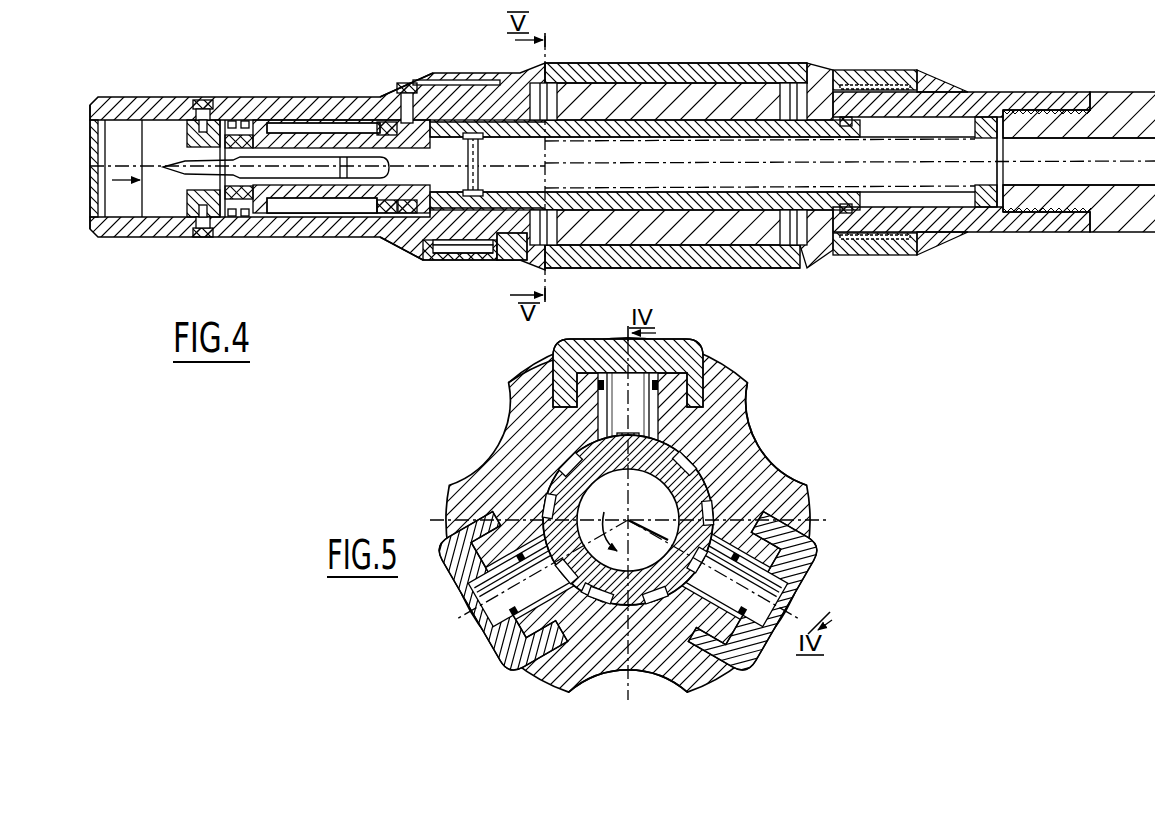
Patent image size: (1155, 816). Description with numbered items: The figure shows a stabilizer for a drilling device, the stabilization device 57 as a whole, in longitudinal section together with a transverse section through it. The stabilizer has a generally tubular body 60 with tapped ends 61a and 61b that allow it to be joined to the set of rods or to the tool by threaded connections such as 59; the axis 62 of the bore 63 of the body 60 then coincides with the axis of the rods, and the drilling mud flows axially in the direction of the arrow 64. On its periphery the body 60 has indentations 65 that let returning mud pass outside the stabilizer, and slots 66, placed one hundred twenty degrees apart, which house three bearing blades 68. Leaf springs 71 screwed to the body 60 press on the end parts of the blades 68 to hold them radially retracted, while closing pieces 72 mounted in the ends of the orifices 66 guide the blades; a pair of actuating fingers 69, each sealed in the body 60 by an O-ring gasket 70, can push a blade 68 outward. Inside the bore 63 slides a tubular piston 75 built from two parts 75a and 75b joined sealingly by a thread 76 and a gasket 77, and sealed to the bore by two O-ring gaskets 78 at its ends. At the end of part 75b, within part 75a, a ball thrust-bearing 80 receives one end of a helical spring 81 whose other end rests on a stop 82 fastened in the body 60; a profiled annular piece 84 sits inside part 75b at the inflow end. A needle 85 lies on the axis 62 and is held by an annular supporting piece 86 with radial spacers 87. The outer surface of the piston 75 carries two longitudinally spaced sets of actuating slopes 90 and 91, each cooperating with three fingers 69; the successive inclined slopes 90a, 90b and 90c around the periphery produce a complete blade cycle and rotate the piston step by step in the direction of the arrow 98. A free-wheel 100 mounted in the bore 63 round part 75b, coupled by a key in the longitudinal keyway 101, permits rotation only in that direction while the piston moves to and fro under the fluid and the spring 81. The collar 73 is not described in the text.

In FIG. 4, the stabilization device 57 is at (745, 268).
In FIG. 4, the threaded connection 59 is at (1093, 215).
In FIG. 4, the body 60 is at (953, 220).
In FIG. 5, the body 60 is at (714, 380).
In FIG. 4, the tapped end 61a is at (140, 227).
In FIG. 4, the tapped end 61b is at (1033, 218).
In FIG. 4, the axis 62 is at (1100, 158).
In FIG. 5, the axis 62 is at (632, 518).
In FIG. 4, the bore 63 is at (353, 121).
In FIG. 4, the arrow 64 is at (135, 184).
In FIG. 5, the indentations 65 is at (742, 438).
In FIG. 5, the slots 66 is at (545, 378).
In FIG. 4, the bearing blades 68 is at (603, 258).
In FIG. 5, the bearing blades 68 is at (589, 343).
In FIG. 4, the actuating fingers 69 is at (555, 244).
In FIG. 5, the actuating fingers 69 is at (655, 342).
In FIG. 4, the O-ring gasket 70 is at (503, 234).
In FIG. 5, the O-ring gasket 70 is at (597, 402).
In FIG. 4, the leaf springs 71 is at (474, 254).
In FIG. 4, the closing pieces 72 is at (447, 248).
In FIG. 4, the tapered collar 73 is at (937, 118).
In FIG. 4, the tubular piston 75 is at (573, 113).
In FIG. 4, the piston part 75a is at (613, 130).
In FIG. 4, the piston part 75b is at (317, 137).
In FIG. 4, the thread 76 is at (418, 234).
In FIG. 4, the gasket 77 is at (430, 197).
In FIG. 4, the O-ring gaskets 78 is at (247, 213).
In FIG. 4, the ball thrust-bearing 80 is at (470, 246).
In FIG. 4, the helical spring 81 is at (948, 160).
In FIG. 4, the stop 82 is at (980, 118).
In FIG. 4, the profiled annular piece 84 is at (234, 140).
In FIG. 4, the needle 85 is at (300, 172).
In FIG. 4, the annular supporting piece 86 is at (213, 212).
In FIG. 4, the radial spacers 87 is at (210, 147).
In FIG. 4, the set of actuating slopes 90 is at (483, 110).
In FIG. 5, the inclined slope 90a is at (705, 560).
In FIG. 5, the inclined slope 90b is at (641, 640).
In FIG. 5, the inclined slope 90c is at (596, 602).
In FIG. 4, the set of actuating slopes 91 is at (741, 127).
In FIG. 5, the arrow 98 is at (603, 518).
In FIG. 4, the free-wheel 100 is at (376, 100).
In FIG. 4, the keyway 101 is at (353, 201).